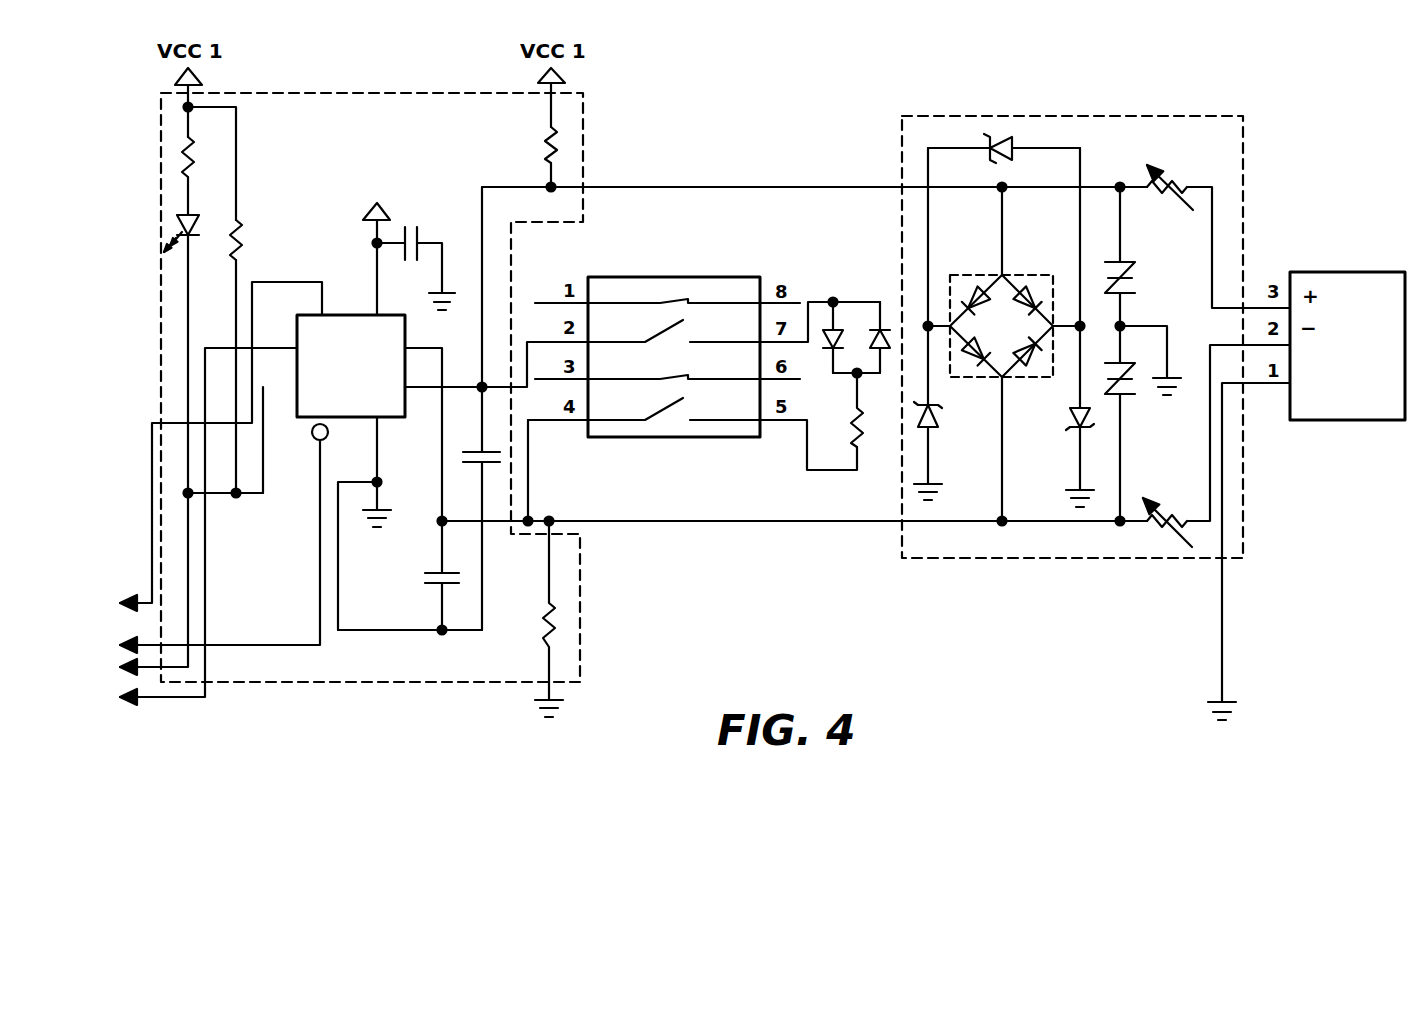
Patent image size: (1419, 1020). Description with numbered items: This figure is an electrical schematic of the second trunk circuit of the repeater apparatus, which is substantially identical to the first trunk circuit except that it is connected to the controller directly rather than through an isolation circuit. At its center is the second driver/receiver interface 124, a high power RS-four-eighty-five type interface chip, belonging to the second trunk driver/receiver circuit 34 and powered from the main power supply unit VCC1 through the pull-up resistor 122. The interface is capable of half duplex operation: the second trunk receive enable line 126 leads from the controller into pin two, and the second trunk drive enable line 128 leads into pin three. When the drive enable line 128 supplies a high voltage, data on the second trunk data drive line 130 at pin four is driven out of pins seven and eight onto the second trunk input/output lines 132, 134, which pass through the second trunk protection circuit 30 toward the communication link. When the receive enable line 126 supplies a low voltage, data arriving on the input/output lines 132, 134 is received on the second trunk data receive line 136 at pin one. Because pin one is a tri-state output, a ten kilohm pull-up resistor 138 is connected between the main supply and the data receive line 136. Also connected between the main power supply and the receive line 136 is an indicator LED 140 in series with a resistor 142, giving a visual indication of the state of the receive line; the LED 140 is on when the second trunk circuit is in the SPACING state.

The second trunk protection circuit 30 is at (1135, 117).
The second trunk driver/receiver circuit 34 is at (423, 93).
The pull-up resistor 122 is at (558, 146).
The second driver/receiver interface 124 is at (370, 315).
The second trunk receive enable line 126 is at (318, 613).
The second trunk drive enable line 128 is at (284, 276).
The second trunk data drive line 130 is at (222, 347).
The second trunk input/output line 132 is at (768, 187).
The second trunk input/output line 134 is at (828, 523).
The second trunk data receive line 136 is at (215, 496).
The pull-up resistor 138 is at (242, 226).
The indicator LED 140 is at (214, 205).
The resistor 142 is at (214, 142).